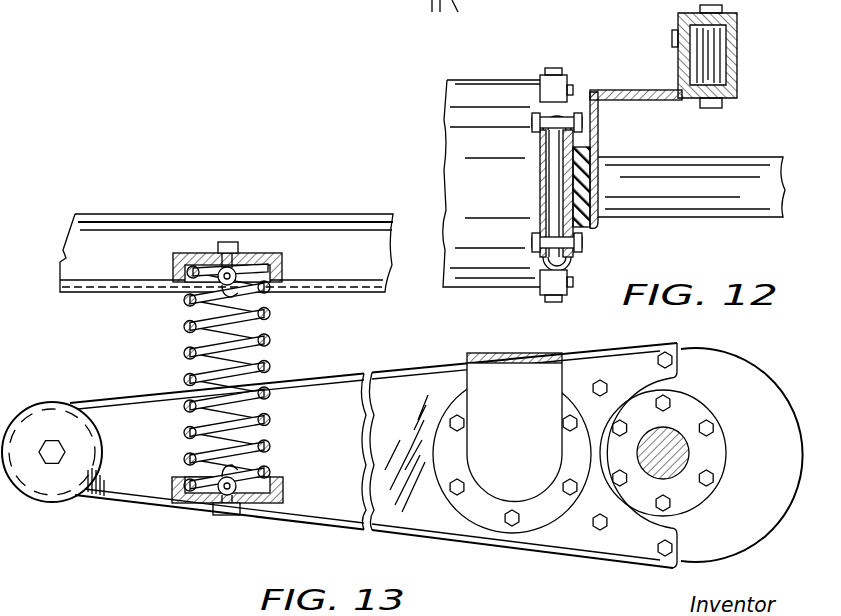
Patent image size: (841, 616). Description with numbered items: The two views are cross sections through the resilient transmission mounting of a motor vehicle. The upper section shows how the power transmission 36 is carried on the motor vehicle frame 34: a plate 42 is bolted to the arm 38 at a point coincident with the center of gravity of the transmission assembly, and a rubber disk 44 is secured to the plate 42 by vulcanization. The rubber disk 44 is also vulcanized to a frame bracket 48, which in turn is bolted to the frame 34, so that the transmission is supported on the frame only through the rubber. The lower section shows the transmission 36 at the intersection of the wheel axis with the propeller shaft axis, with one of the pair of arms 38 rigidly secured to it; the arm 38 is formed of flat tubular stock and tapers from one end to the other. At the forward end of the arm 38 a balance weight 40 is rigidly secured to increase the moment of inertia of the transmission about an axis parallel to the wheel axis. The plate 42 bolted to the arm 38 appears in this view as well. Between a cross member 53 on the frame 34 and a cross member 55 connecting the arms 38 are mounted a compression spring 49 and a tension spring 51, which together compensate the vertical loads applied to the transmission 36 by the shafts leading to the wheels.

In FIG. 12, the motor vehicle frame 34 is at (737, 45).
In FIG. 12, the power transmission 36 is at (478, 80).
In FIG. 13, the power transmission 36 is at (717, 372).
In FIG. 12, the arms 38 is at (540, 178).
In FIG. 13, the arms 38 is at (357, 372).
In FIG. 13, the balance weights 40 is at (42, 410).
In FIG. 12, the plates 42 is at (572, 262).
In FIG. 13, the plates 42 is at (440, 462).
In FIG. 12, the rubber disks 44 is at (583, 228).
In FIG. 12, the frame brackets 48 is at (597, 110).
In FIG. 13, the compression spring 49 is at (268, 318).
In FIG. 13, the tension spring 51 is at (213, 298).
In FIG. 13, the cross member 53 is at (282, 268).
In FIG. 13, the cross member 55 is at (283, 487).